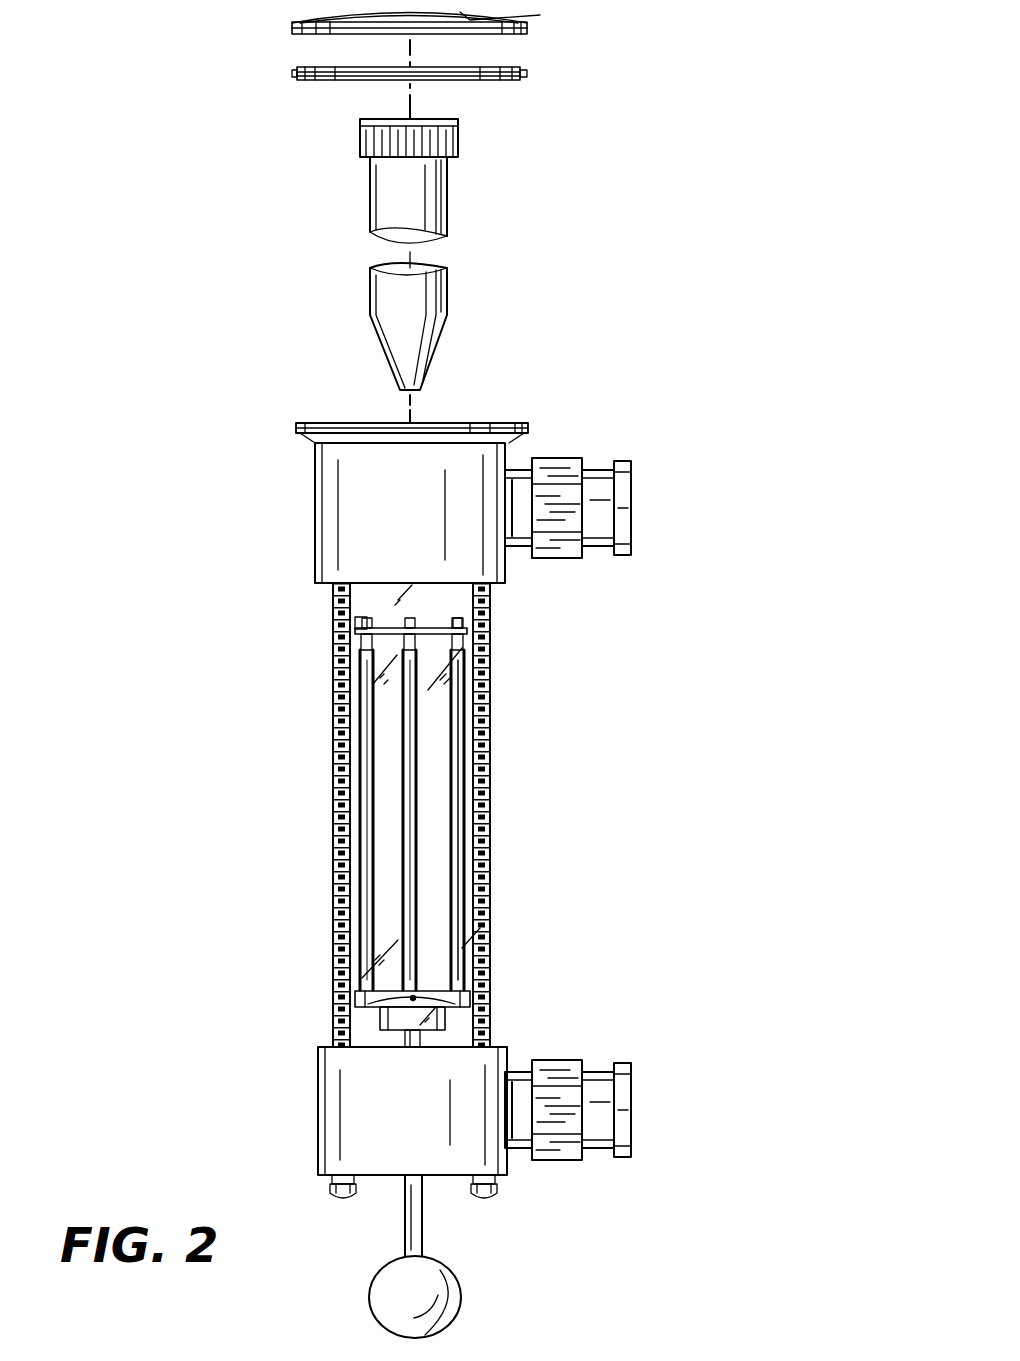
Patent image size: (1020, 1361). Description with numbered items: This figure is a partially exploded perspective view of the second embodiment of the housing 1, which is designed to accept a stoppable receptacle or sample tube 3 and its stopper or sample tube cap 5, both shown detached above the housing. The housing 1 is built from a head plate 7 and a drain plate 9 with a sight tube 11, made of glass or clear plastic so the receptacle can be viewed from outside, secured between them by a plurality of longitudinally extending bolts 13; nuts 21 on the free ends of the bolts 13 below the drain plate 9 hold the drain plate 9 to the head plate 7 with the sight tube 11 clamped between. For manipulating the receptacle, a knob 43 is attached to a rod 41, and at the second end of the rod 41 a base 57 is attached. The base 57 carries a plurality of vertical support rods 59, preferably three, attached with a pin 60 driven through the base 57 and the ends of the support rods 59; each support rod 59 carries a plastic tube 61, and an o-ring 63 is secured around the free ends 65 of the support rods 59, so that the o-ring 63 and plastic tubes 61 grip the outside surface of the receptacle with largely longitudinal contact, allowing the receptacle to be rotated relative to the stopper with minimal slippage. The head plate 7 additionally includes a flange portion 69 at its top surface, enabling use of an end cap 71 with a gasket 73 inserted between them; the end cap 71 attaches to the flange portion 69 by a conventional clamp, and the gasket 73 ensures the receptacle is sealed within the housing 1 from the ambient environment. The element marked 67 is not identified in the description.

The housing 1 is at (174, 724).
The sample tube 3 is at (448, 218).
The sample tube cap 5 is at (458, 133).
The head plate 7 is at (315, 496).
The drain plate 9 is at (318, 1133).
The sight tube 11 is at (445, 760).
The bolts 13 is at (333, 882).
The nuts 21 is at (498, 1185).
The rod 41 is at (425, 1225).
The knob 43 is at (462, 1302).
The base 57 is at (445, 1015).
The support rods 59 is at (468, 928).
The pin 60 is at (355, 999).
The plastic tubes 61 is at (467, 893).
The o-ring 63 is at (445, 616).
The free ends 65 is at (355, 622).
The tab 67 is at (465, 630).
The flange portion 69 is at (296, 428).
The end cap 71 is at (527, 28).
The gasket 73 is at (527, 73).